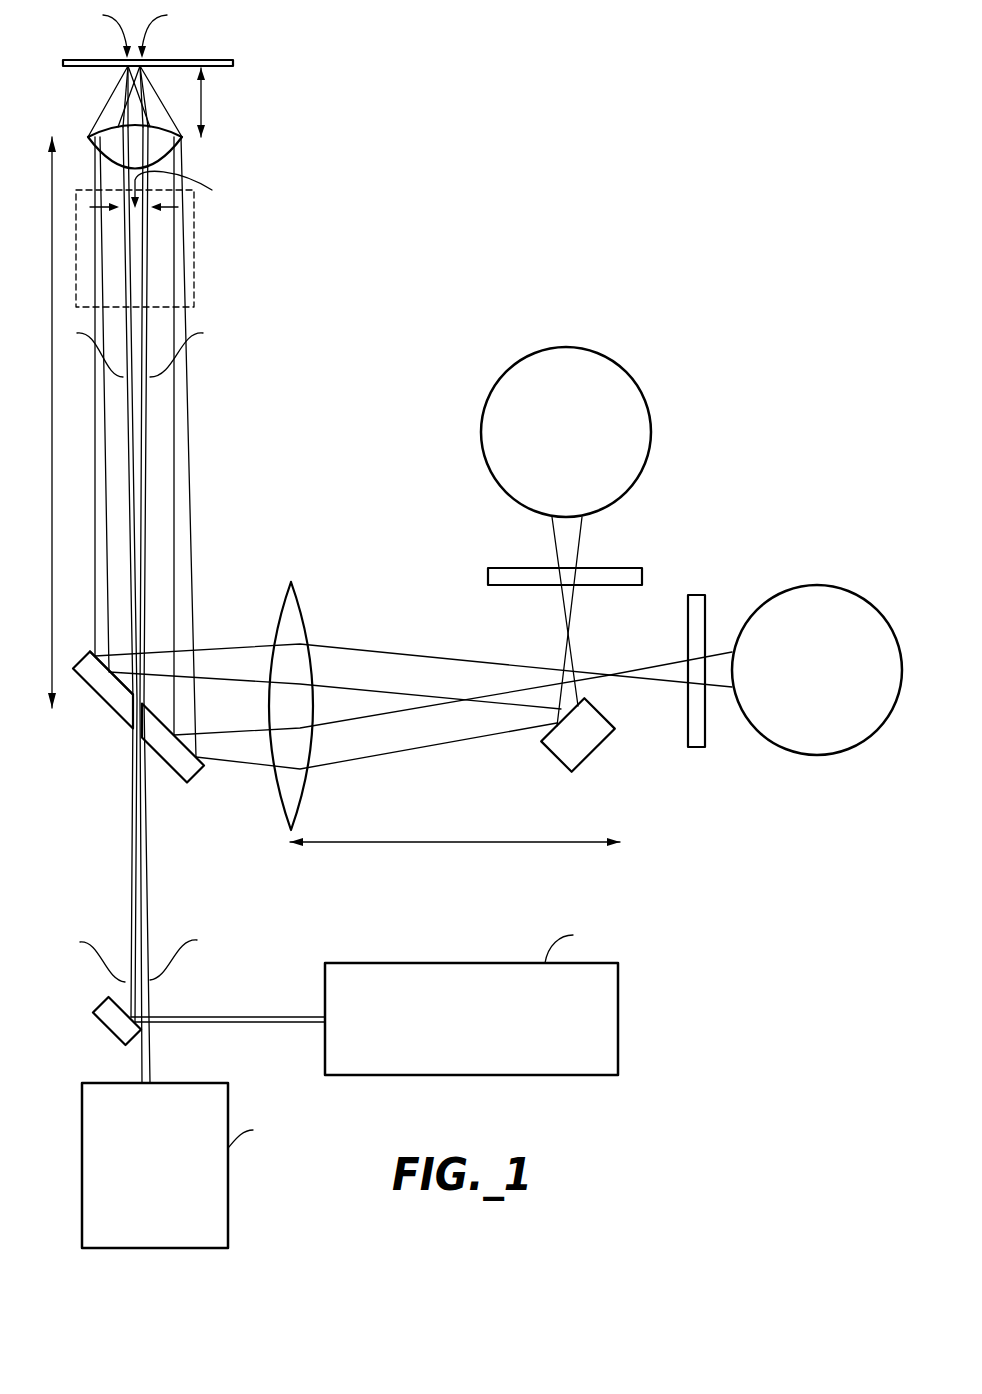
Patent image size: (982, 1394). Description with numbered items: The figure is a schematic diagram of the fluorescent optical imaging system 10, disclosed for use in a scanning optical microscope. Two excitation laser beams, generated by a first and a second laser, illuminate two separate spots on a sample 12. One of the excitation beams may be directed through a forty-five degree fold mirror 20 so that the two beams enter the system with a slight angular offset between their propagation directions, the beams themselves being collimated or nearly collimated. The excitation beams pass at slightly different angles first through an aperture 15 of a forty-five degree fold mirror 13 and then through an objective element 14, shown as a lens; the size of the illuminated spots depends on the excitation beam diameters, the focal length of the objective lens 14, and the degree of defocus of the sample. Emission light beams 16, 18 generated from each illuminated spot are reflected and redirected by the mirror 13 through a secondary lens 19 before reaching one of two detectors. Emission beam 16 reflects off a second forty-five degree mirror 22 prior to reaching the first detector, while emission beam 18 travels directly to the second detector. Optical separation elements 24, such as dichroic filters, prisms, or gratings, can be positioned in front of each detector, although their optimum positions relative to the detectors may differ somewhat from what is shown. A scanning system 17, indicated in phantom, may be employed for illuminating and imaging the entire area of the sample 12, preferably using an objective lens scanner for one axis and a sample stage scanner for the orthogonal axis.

The fluorescent optical imaging system 10 is at (414, 220).
The sample 12 is at (216, 60).
The 45° fold mirror 13 is at (173, 777).
The objective element 14 is at (183, 138).
The aperture 15 is at (128, 733).
The emission light beam 16 is at (160, 456).
The scanning system 17 is at (196, 250).
The emission light beam 18 is at (120, 460).
The secondary lens 19 is at (305, 608).
The 45° fold mirror 20 is at (108, 1033).
The second 45° mirror 22 is at (596, 752).
The optical separation elements 24 is at (593, 568).